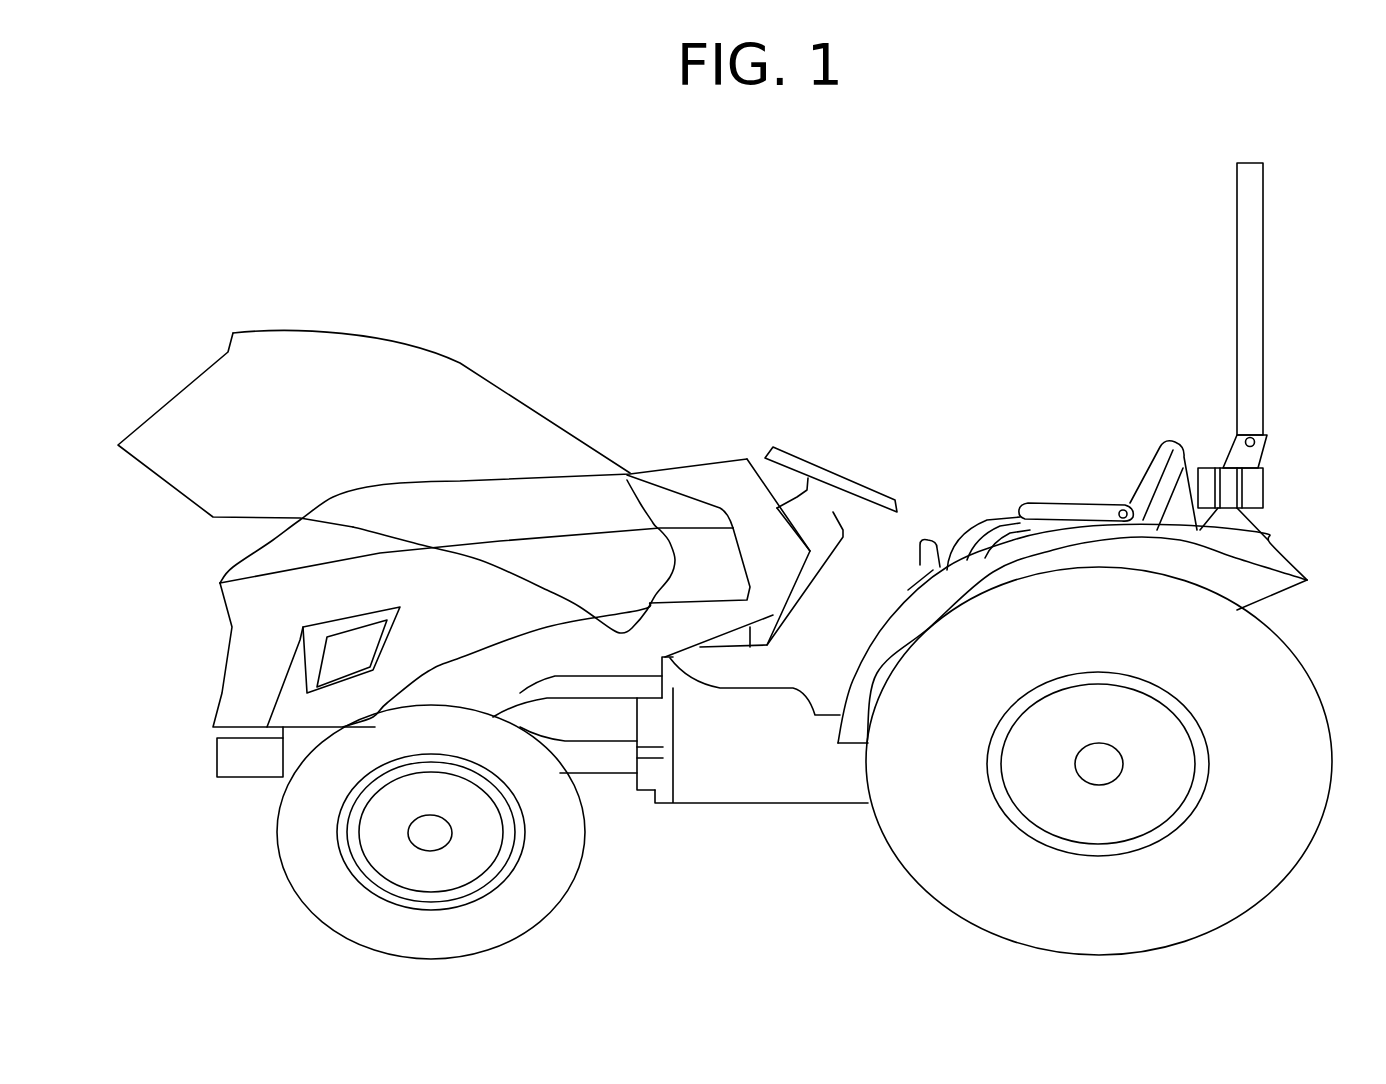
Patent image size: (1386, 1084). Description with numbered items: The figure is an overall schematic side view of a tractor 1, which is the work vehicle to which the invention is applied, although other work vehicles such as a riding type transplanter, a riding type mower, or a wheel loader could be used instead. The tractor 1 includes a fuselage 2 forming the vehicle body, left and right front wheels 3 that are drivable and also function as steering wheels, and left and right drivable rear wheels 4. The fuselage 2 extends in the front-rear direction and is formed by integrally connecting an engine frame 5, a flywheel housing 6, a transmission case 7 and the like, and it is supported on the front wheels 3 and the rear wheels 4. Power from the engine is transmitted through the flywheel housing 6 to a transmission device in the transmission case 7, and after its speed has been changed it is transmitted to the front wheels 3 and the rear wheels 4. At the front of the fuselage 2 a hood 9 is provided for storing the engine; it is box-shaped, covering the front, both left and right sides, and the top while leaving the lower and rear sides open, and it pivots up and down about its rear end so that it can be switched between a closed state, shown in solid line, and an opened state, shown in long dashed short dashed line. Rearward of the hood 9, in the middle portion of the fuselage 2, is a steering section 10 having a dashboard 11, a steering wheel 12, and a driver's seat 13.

The tractor 1 is at (772, 300).
The fuselage 2 is at (720, 806).
The front wheels 3 is at (318, 883).
The rear wheels 4 is at (1275, 870).
The engine frame 5 is at (240, 758).
The flywheel housing 6 is at (645, 805).
The transmission case 7 is at (797, 792).
The hood 9 is at (455, 362).
The steering section 10 is at (873, 390).
The dashboard 11 is at (730, 470).
The steering wheel 12 is at (855, 490).
The driver's seat 13 is at (1153, 445).